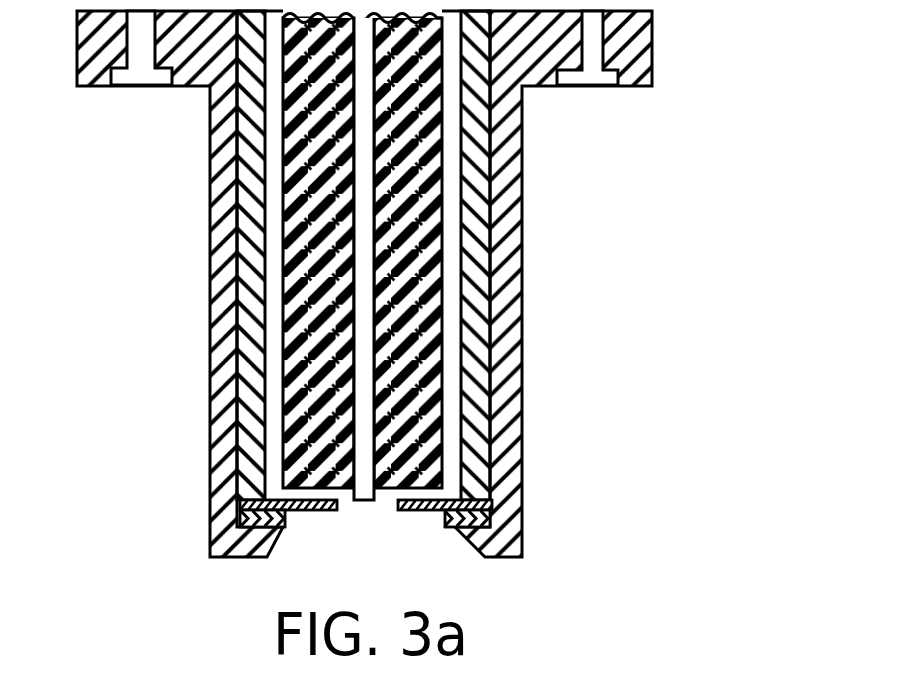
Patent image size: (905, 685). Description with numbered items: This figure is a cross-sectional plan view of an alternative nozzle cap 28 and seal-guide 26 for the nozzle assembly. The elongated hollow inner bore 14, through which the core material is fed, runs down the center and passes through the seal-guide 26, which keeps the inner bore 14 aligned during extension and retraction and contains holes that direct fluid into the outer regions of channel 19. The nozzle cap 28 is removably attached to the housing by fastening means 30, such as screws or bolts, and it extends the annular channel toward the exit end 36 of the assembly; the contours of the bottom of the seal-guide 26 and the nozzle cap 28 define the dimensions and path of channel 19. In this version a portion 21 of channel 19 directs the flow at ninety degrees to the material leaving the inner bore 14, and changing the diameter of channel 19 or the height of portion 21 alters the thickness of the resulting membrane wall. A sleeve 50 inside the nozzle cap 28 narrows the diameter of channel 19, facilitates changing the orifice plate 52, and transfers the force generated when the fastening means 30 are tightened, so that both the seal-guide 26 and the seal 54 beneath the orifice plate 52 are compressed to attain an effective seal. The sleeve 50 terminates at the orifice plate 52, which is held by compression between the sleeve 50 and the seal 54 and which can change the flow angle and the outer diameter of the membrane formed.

The inner bore 14 is at (378, 317).
The channel 19 is at (458, 499).
The portion of channel 21 is at (435, 515).
The seal-guide 26 is at (428, 433).
The nozzle cap 28 is at (92, 86).
The fastening means 30 is at (160, 87).
The exit end 36 is at (362, 515).
The sleeve 50 is at (481, 358).
The orifice plate 52 is at (245, 498).
The seal 54 is at (242, 522).